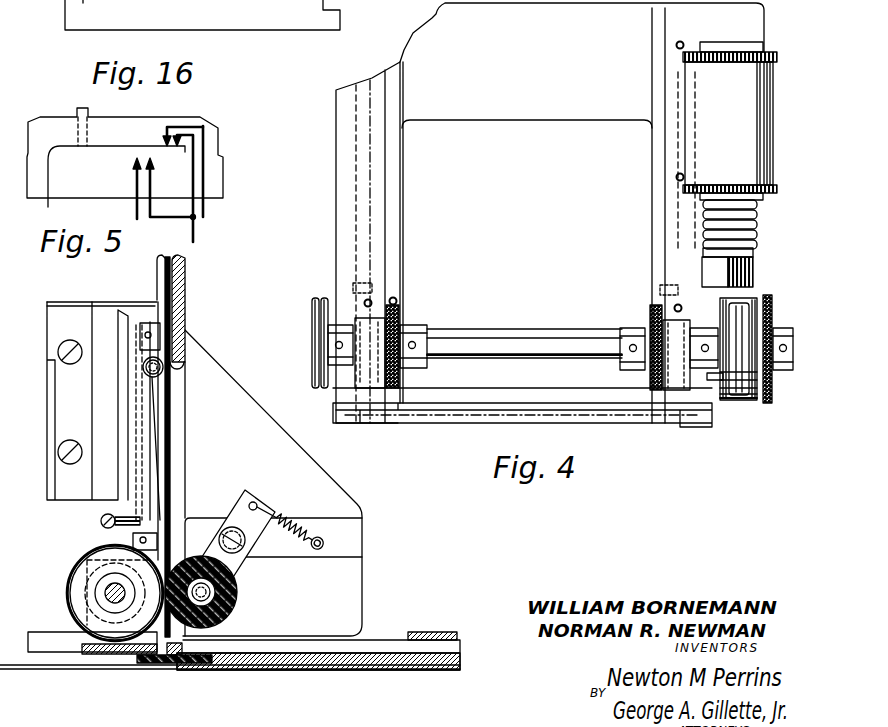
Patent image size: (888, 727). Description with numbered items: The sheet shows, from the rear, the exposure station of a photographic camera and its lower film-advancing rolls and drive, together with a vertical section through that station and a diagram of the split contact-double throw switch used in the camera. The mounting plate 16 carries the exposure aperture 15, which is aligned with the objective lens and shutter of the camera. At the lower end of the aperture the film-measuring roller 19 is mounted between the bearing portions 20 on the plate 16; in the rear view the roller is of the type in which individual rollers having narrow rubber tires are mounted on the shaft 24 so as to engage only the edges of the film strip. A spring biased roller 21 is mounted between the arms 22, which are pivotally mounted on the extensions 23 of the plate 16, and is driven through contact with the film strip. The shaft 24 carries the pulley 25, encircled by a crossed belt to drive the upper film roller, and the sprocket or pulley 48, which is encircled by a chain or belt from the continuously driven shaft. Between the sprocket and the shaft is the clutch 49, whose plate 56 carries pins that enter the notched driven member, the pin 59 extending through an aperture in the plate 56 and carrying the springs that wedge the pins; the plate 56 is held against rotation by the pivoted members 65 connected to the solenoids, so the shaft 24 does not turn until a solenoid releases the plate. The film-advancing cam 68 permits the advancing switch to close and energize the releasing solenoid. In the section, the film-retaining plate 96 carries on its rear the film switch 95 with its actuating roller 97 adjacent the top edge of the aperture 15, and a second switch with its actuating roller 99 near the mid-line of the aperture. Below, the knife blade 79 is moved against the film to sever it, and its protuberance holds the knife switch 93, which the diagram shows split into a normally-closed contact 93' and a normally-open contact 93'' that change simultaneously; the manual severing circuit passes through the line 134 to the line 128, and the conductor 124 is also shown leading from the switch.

In FIG. 16, the knife switch 93 is at (120, 139).
In FIG. 16, the normally-closed knife switch contact 93' is at (185, 153).
In FIG. 16, the normally-open knife switch contact 93'' is at (148, 182).
In FIG. 16, the line 134 is at (137, 185).
In FIG. 16, the line 128 is at (204, 176).
In FIG. 16, the conduit 124 is at (194, 241).
In FIG. 5, the film-retaining plate 96 is at (157, 262).
In FIG. 5, the mounting plate 16 is at (181, 300).
In FIG. 4, the mounting plate 16 is at (582, 213).
In FIG. 5, the film switch 95 is at (54, 325).
In FIG. 5, the exposure aperture 15 is at (180, 369).
In FIG. 4, the exposure aperture 15 is at (505, 122).
In FIG. 5, the actuating roller 97 is at (160, 377).
In FIG. 5, the actuating roller 99 is at (176, 470).
In FIG. 5, the extensions 23 is at (318, 487).
In FIG. 4, the extensions 23 is at (362, 196).
In FIG. 5, the arms 22 is at (241, 510).
In FIG. 4, the arms 22 is at (398, 240).
In FIG. 5, the film-measuring roller 19 is at (98, 548).
In FIG. 4, the film-measuring roller 19 is at (399, 303).
In FIG. 5, the shaft 24 is at (108, 590).
In FIG. 4, the shaft 24 is at (500, 343).
In FIG. 5, the bearing portions 20 is at (70, 601).
In FIG. 4, the bearing portions 20 is at (357, 320).
In FIG. 5, the spring biased roller 21 is at (236, 596).
In FIG. 5, the knife blade 79 is at (195, 665).
In FIG. 4, the pulley 25 is at (313, 315).
In FIG. 4, the film-advancing cam 68 is at (727, 146).
In FIG. 4, the pivoted members 65 is at (735, 268).
In FIG. 4, the pin 59 is at (709, 376).
In FIG. 4, the clutch 49 is at (735, 403).
In FIG. 4, the plate 56 is at (724, 350).
In FIG. 4, the sprocket or pulley 48 is at (768, 408).